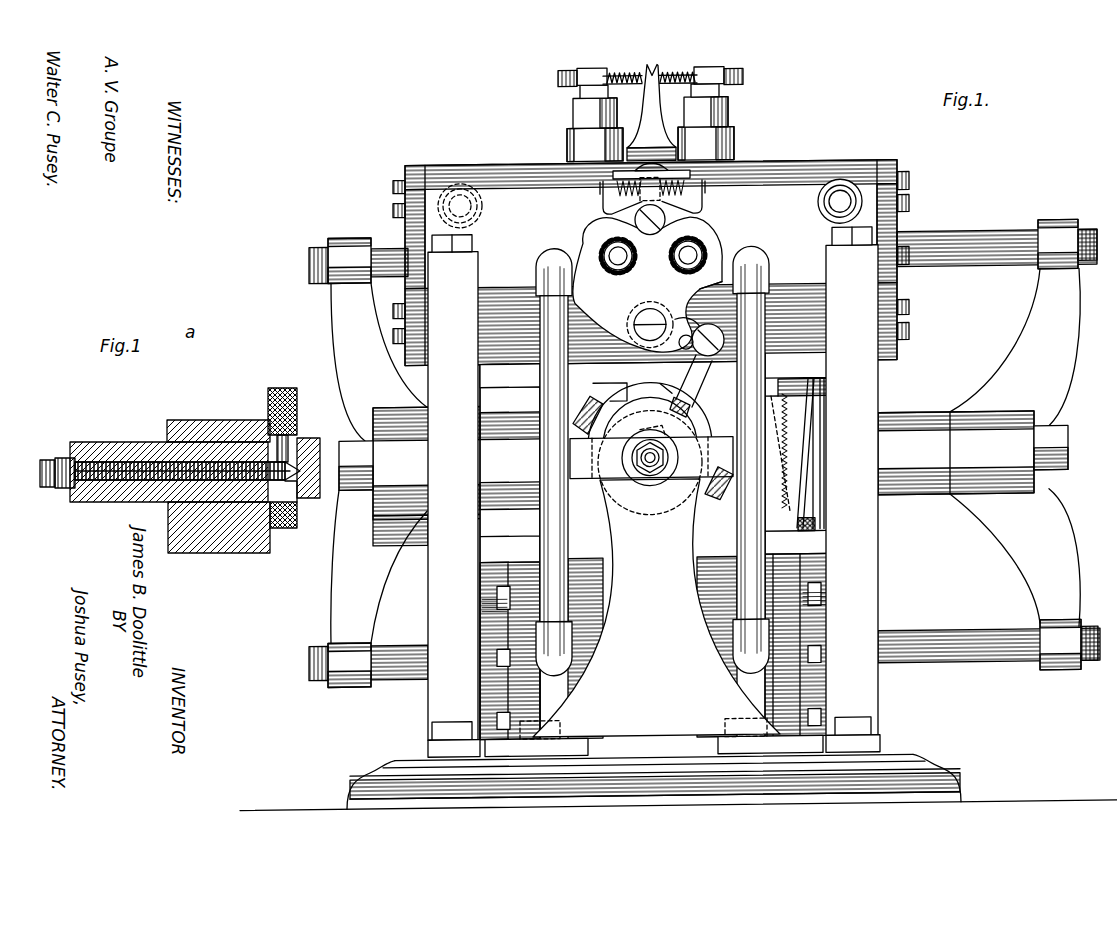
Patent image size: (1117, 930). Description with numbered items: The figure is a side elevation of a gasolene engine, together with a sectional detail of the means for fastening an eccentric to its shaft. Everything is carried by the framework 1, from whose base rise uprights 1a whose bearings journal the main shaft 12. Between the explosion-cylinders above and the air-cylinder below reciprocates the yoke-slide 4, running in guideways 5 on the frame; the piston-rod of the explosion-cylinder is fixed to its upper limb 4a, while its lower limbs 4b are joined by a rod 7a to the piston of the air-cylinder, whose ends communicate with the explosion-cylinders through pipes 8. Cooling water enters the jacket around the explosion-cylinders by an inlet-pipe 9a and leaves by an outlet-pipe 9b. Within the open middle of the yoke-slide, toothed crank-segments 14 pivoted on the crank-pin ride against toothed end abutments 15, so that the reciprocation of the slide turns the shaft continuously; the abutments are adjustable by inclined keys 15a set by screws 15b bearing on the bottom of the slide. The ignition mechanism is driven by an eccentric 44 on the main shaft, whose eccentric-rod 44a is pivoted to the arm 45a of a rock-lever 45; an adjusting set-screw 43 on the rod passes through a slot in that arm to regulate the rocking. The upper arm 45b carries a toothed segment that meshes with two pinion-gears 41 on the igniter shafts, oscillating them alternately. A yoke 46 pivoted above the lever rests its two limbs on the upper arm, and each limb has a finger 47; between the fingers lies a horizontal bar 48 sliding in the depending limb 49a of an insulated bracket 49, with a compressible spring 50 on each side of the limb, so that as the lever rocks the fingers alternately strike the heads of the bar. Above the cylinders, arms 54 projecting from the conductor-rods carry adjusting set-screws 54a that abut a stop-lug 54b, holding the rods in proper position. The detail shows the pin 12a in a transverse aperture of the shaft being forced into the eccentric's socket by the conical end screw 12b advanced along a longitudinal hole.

In FIG. 1, the framework 1 is at (395, 762).
In FIG. 1, the uprights 1a is at (656, 607).
In FIG. 1A, the uprights 1a is at (245, 545).
In FIG. 1, the yoke-slide 4 is at (703, 472).
In FIG. 1, the upper limb 4a is at (705, 354).
In FIG. 1, the lower limbs 4b is at (705, 562).
In FIG. 1, the guideways 5 is at (653, 458).
In FIG. 1, the rod 7a is at (980, 655).
In FIG. 1, the pipes 8 is at (652, 461).
In FIG. 1, the inlet-pipe 9a is at (845, 184).
In FIG. 1, the outlet-pipe 9b is at (465, 185).
In FIG. 1, the main shaft 12 is at (650, 490).
In FIG. 1A, the main shaft 12 is at (142, 446).
In FIG. 1, the pin 12a is at (648, 448).
In FIG. 1A, the pin 12a is at (290, 447).
In FIG. 1, the conical end screw 12b is at (652, 480).
In FIG. 1A, the conical end screw 12b is at (297, 512).
In FIG. 1, the crank-segments 14 is at (771, 455).
In FIG. 1, the end abutments 15 is at (788, 483).
In FIG. 1, the inclined keys 15a is at (812, 437).
In FIG. 1, the screws 15b is at (817, 528).
In FIG. 1, the pinion-gear 41 is at (600, 258).
In FIG. 1, the adjusting set-screw 43 is at (707, 362).
In FIG. 1, the eccentric 44 is at (695, 420).
In FIG. 1A, the eccentric 44 is at (297, 418).
In FIG. 1, the eccentric-rod 44a is at (660, 386).
In FIG. 1, the rock-lever 45 is at (660, 311).
In FIG. 1, the arm 45a is at (690, 325).
In FIG. 1, the upper arm 45b is at (685, 276).
In FIG. 1, the yoke 46 is at (665, 221).
In FIG. 1, the finger 47 is at (617, 190).
In FIG. 1, the horizontal bar 48 is at (613, 177).
In FIG. 1, the bracket 49 is at (690, 177).
In FIG. 1, the depending limb 49a is at (640, 210).
In FIG. 1, the compressible spring 50 is at (603, 200).
In FIG. 1, the arms 54 is at (588, 72).
In FIG. 1, the adjusting set-screw 54a is at (700, 55).
In FIG. 1, the stop-lug 54b is at (652, 66).